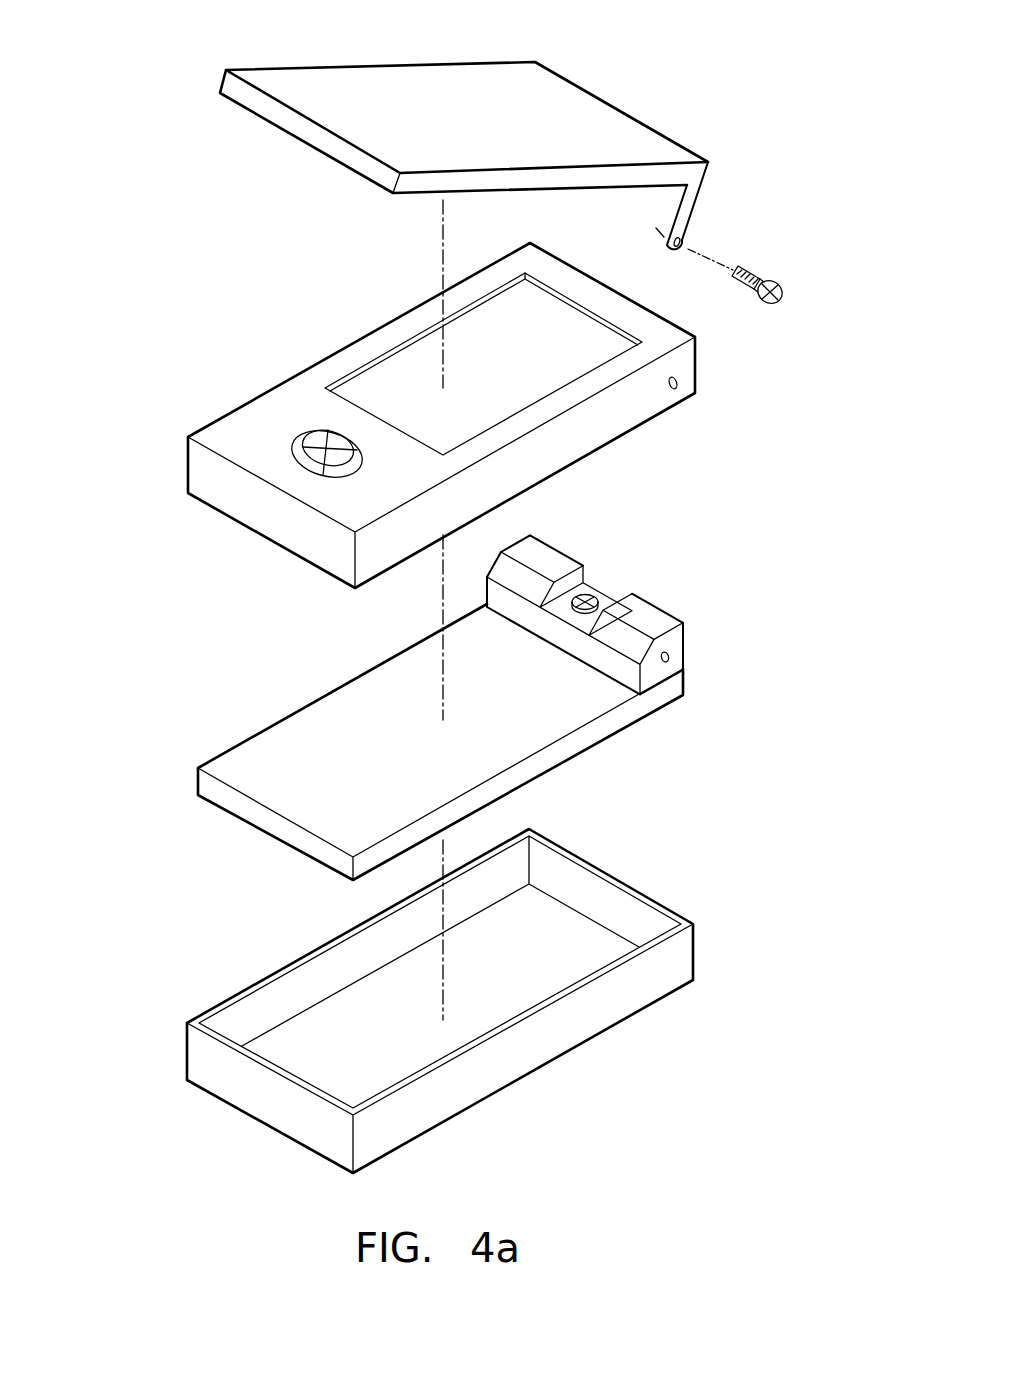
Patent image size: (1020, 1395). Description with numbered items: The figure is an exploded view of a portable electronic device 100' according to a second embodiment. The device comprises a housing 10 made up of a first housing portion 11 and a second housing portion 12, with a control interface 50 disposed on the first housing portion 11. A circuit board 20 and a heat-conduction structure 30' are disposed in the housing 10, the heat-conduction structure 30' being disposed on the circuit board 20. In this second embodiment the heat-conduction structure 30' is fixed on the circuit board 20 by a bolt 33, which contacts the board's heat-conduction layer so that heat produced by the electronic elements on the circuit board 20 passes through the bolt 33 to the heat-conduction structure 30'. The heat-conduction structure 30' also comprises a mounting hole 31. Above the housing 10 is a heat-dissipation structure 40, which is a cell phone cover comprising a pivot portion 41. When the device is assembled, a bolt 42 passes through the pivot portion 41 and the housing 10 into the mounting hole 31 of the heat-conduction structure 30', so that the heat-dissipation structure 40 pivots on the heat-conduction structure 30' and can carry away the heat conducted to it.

The portable electronic device 100' is at (444, 592).
The housing 10 is at (378, 708).
The first housing portion 11 is at (408, 415).
The second housing portion 12 is at (407, 1001).
The circuit board 20 is at (617, 720).
The heat-conduction structure 30' is at (624, 614).
The mounting hole 31 is at (670, 657).
The bolt 33 is at (598, 598).
The heat-dissipation structure 40 is at (608, 115).
The pivot portion 41 is at (692, 207).
The bolt 42 is at (757, 278).
The control interface 50 is at (408, 362).